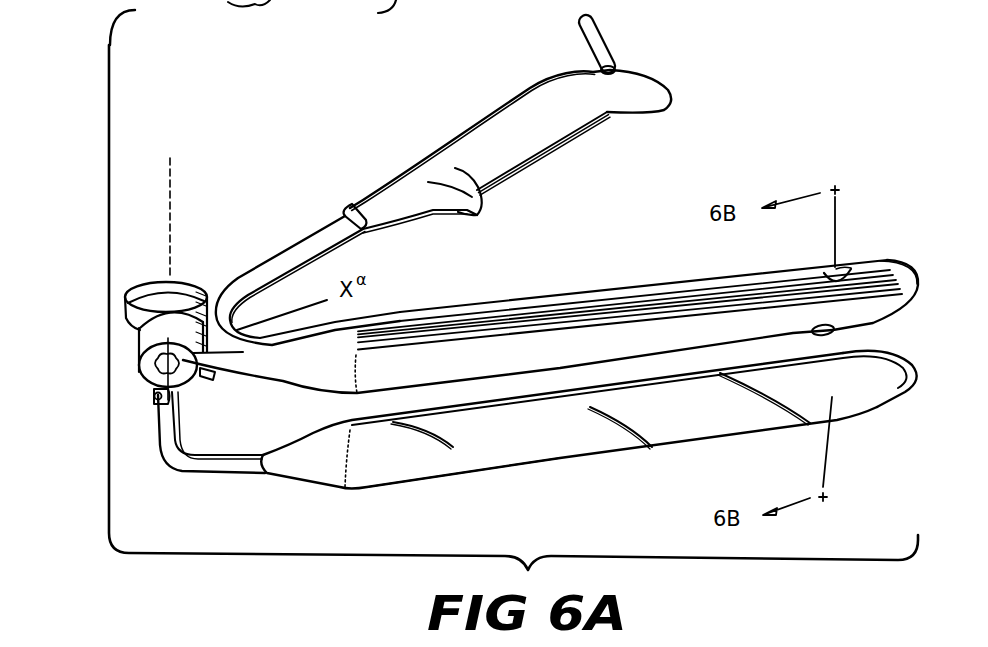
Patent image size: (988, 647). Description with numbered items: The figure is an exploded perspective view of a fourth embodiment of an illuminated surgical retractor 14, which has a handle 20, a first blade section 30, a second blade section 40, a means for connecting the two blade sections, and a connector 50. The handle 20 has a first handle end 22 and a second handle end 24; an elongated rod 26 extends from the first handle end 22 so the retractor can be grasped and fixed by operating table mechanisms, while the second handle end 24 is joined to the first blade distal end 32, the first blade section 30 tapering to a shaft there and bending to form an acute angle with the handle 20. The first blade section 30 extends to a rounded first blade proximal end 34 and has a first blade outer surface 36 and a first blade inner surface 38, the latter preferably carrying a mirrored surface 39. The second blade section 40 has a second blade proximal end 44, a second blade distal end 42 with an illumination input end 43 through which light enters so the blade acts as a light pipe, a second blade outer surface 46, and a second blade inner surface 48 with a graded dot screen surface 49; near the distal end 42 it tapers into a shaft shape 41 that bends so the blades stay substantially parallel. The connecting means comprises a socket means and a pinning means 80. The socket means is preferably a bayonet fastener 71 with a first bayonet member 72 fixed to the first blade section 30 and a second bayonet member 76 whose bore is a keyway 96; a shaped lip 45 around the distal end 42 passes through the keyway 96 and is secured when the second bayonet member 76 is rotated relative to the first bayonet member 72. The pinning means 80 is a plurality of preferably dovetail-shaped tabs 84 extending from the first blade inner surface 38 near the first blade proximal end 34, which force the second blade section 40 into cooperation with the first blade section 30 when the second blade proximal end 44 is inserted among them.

The illuminated surgical retractor 14 is at (537, 140).
The handle 20 is at (492, 122).
The first handle end 22 is at (620, 68).
The second handle end 24 is at (357, 210).
The elongated rod 26 is at (600, 33).
The first blade section 30 is at (527, 303).
The first blade distal end 32 is at (343, 216).
The first blade proximal end 34 is at (905, 290).
The first blade outer surface 36 is at (598, 297).
The first blade inner surface 38 is at (663, 315).
The mirrored surface 39 is at (455, 343).
The second blade section 40 is at (593, 457).
The shaft shape 41 is at (168, 462).
The second blade distal end 42 is at (182, 400).
The illumination input end 43 is at (183, 396).
The second blade proximal end 44 is at (905, 380).
The shaped lip 45 is at (153, 403).
The second blade outer surface 46 is at (880, 345).
The second blade inner surface 48 is at (540, 453).
The graded dot screen surface 49 is at (477, 455).
The connector 50 is at (150, 280).
The bayonet fastener 71 is at (183, 283).
The first bayonet member 72 is at (127, 302).
The second bayonet member 76 is at (147, 340).
The pinning means 80 is at (843, 263).
The tabs 84 is at (832, 270).
The keyway 96 is at (153, 363).